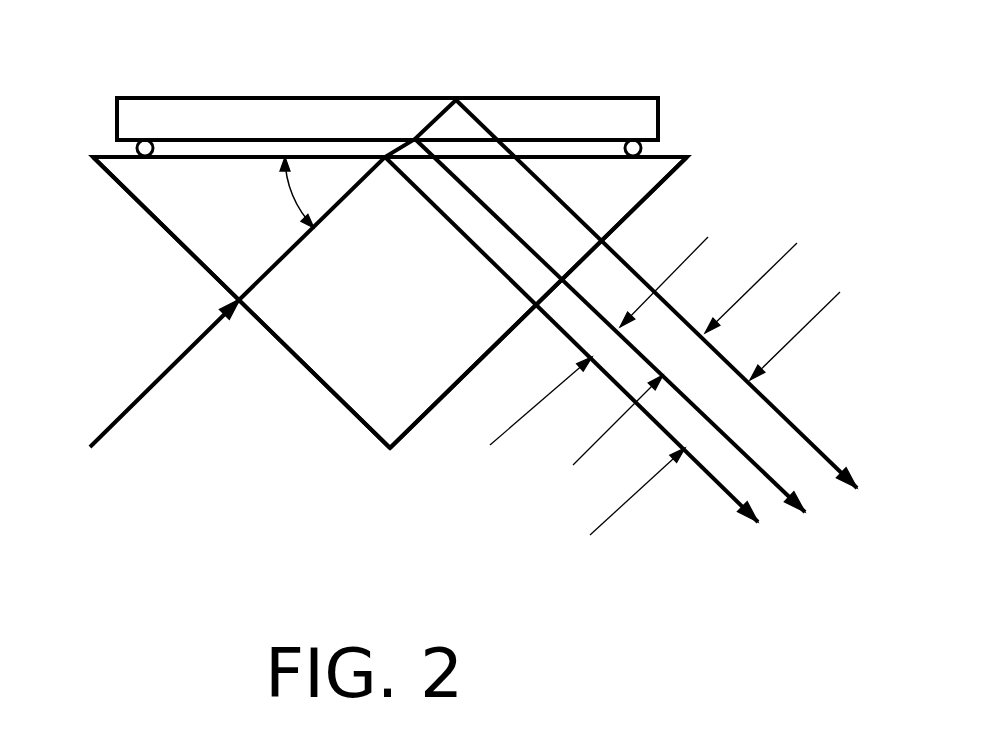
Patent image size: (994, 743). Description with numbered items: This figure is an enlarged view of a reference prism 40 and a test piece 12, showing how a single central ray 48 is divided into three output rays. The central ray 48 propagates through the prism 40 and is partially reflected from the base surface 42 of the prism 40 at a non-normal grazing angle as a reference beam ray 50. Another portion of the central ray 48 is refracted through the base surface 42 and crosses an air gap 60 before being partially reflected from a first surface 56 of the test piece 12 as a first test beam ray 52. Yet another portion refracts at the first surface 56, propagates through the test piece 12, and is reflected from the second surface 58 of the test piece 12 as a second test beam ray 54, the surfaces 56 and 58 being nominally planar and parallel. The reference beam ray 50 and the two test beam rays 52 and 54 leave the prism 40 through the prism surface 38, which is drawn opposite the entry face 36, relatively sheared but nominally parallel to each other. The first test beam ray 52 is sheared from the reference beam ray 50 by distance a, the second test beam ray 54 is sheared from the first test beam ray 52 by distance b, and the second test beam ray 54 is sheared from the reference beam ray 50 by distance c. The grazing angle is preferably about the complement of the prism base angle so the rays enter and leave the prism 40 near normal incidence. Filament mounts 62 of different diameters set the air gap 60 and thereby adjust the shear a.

The test piece 12 is at (195, 112).
The first prism face 36 is at (283, 351).
The prism surface 38 is at (460, 384).
The prism 40 is at (394, 331).
The base surface 42 is at (215, 158).
The central ray 48 is at (147, 390).
The reference beam ray 50 is at (712, 483).
The first test beam ray 52 is at (774, 488).
The second test beam ray 54 is at (805, 432).
The first surface 56 is at (570, 141).
The second surface 58 is at (513, 99).
The air gap 60 is at (337, 148).
The filament mounts 62 is at (137, 148).
The shear distance a is at (690, 258).
The shear distance b is at (765, 278).
The shear distance c is at (802, 337).